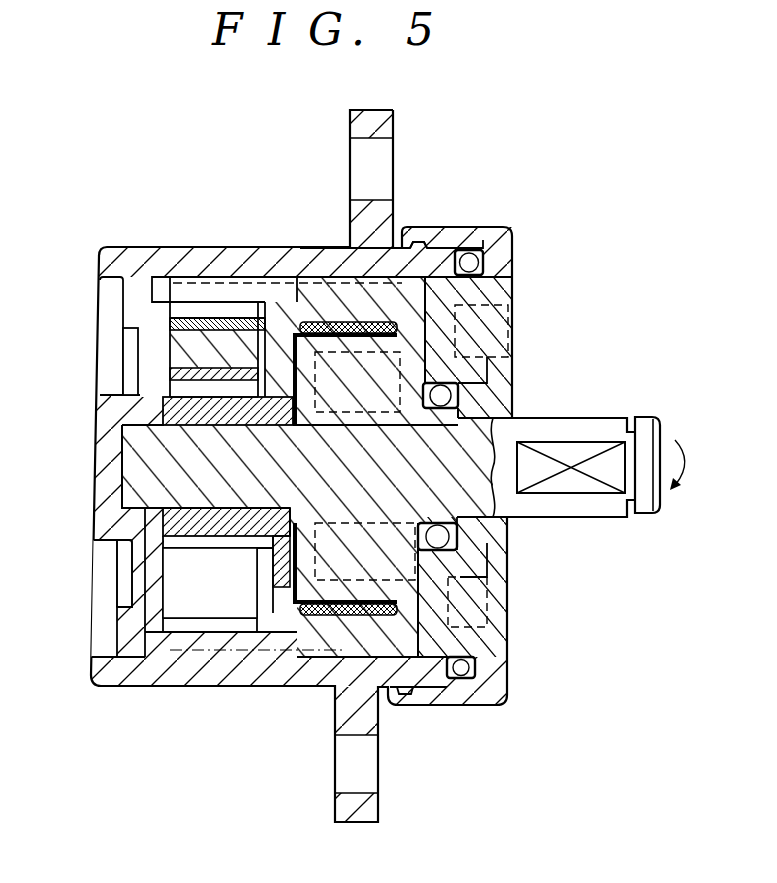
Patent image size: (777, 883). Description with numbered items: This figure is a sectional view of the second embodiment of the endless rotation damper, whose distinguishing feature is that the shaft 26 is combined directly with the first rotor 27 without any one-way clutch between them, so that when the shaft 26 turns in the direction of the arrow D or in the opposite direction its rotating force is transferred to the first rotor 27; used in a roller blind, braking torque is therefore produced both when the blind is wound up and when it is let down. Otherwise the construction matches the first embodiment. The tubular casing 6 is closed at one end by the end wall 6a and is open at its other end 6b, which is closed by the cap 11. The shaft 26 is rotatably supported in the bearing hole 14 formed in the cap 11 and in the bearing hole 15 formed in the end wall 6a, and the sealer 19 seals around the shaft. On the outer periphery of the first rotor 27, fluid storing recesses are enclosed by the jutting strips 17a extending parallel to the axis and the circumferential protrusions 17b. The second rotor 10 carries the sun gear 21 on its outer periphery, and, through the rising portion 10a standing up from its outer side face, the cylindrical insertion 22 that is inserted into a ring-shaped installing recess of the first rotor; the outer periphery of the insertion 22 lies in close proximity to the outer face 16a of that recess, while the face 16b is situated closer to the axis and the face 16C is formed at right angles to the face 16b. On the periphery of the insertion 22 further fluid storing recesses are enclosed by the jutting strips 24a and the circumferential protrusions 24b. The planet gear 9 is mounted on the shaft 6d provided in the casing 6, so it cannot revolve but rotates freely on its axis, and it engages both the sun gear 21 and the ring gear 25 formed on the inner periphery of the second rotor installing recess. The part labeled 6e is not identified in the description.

The casing 6 is at (101, 244).
The end wall 6a is at (130, 640).
The open end 6b is at (461, 250).
The shaft 6d is at (190, 350).
The housing upper recess 6e is at (170, 310).
The planet gear 9 is at (190, 323).
The second rotor 10 is at (180, 413).
The rising portion 10a is at (420, 377).
The cap 11 is at (482, 702).
The bearing hole 14 is at (490, 427).
The bearing hole 15 is at (128, 470).
The one face 16a is at (400, 690).
The face 16b is at (312, 613).
The face 16C is at (447, 583).
The jutting strips 17a is at (289, 247).
The circumferential protrusions 17b is at (160, 277).
The sealer 19 is at (488, 540).
The sun gear 21 is at (173, 392).
The cylindrical insertion 22 is at (262, 594).
The jutting strips 24a is at (290, 606).
The circumferential protrusions 24b is at (392, 607).
The ring gear 25 is at (125, 617).
The shaft 26 is at (598, 430).
The first rotor 27 is at (505, 312).
The arrow D is at (689, 465).